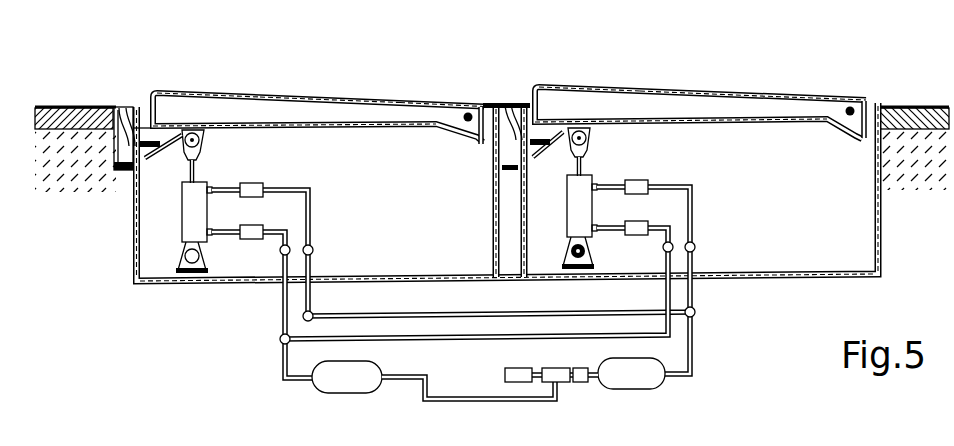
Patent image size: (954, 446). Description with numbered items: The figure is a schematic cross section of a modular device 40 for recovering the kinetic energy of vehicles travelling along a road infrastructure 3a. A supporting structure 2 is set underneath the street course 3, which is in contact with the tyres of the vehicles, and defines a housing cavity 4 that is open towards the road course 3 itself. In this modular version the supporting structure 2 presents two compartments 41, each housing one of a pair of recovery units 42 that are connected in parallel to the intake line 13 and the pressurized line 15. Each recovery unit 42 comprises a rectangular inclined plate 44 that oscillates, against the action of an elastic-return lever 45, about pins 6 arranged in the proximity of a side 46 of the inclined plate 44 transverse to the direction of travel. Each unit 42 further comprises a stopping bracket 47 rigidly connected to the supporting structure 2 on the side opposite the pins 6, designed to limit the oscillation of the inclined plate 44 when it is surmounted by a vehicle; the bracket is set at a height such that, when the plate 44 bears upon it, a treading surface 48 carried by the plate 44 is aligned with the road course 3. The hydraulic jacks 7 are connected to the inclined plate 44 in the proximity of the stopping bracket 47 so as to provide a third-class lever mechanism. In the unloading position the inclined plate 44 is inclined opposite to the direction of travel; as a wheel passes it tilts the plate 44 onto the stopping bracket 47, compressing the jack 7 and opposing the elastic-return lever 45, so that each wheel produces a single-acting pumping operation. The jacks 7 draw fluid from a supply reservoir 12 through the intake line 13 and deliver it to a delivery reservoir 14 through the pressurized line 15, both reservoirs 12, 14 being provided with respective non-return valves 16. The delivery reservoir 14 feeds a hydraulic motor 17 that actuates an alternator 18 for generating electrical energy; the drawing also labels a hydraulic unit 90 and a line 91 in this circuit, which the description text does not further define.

The road infrastructure 3a is at (68, 103).
The street course 3 is at (96, 106).
The supporting structure 2 is at (133, 262).
The housing cavity 4 is at (150, 268).
The compartments 41 is at (540, 273).
The modular device 40 is at (372, 77).
The inclined plate 44 is at (178, 93).
The treading surface 48 is at (335, 96).
The recovery unit 42 is at (398, 96).
The pins 6 is at (470, 132).
The side 46 is at (467, 105).
The elastic-return lever 45 is at (120, 107).
The stopping bracket 47 is at (152, 131).
The hydraulic jacks 7 is at (196, 213).
The pressurized line 15 is at (458, 312).
The intake line 13 is at (410, 338).
The supply reservoir 12 is at (347, 383).
The delivery reservoir 14 is at (627, 377).
The supply line 91 is at (470, 400).
The hydraulic unit 90 is at (656, 396).
The alternator 18 is at (523, 368).
The hydraulic motor 17 is at (562, 356).
The non-return valves 16 is at (253, 185).